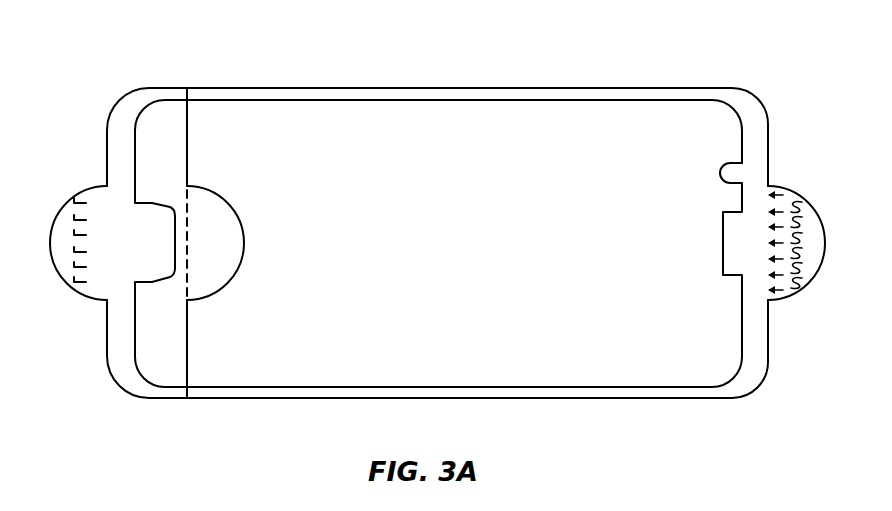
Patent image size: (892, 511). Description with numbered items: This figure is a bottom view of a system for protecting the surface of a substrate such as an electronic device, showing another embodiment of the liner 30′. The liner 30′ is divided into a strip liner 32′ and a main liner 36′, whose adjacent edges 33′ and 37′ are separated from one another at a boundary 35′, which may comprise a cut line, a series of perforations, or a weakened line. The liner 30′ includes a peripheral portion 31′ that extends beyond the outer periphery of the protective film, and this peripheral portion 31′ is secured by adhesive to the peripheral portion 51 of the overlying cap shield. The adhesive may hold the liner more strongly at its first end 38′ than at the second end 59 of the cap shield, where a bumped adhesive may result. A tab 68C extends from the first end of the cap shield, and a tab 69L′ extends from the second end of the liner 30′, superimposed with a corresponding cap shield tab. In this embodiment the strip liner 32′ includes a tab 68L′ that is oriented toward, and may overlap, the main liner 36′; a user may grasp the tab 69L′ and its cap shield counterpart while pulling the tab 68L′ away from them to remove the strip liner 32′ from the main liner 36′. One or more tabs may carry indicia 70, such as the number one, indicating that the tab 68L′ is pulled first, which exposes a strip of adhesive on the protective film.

The liner 30′ is at (96, 119).
The strip liner 32′ is at (168, 115).
The indicia 70 is at (78, 186).
The tab 68C is at (64, 262).
The first end of the liner 38′ is at (115, 328).
The peripheral portion of the liner 31′ is at (125, 372).
The edge of the strip liner 33′ is at (185, 363).
The boundary 35′ is at (178, 373).
The edge of the main liner 37′ is at (187, 383).
The tab 68L′ is at (218, 249).
The peripheral portion of the cap shield 51 is at (767, 118).
The second end of the cap shield 59 is at (757, 157).
The tab 69L′ is at (815, 236).
The main liner 36′ is at (752, 367).